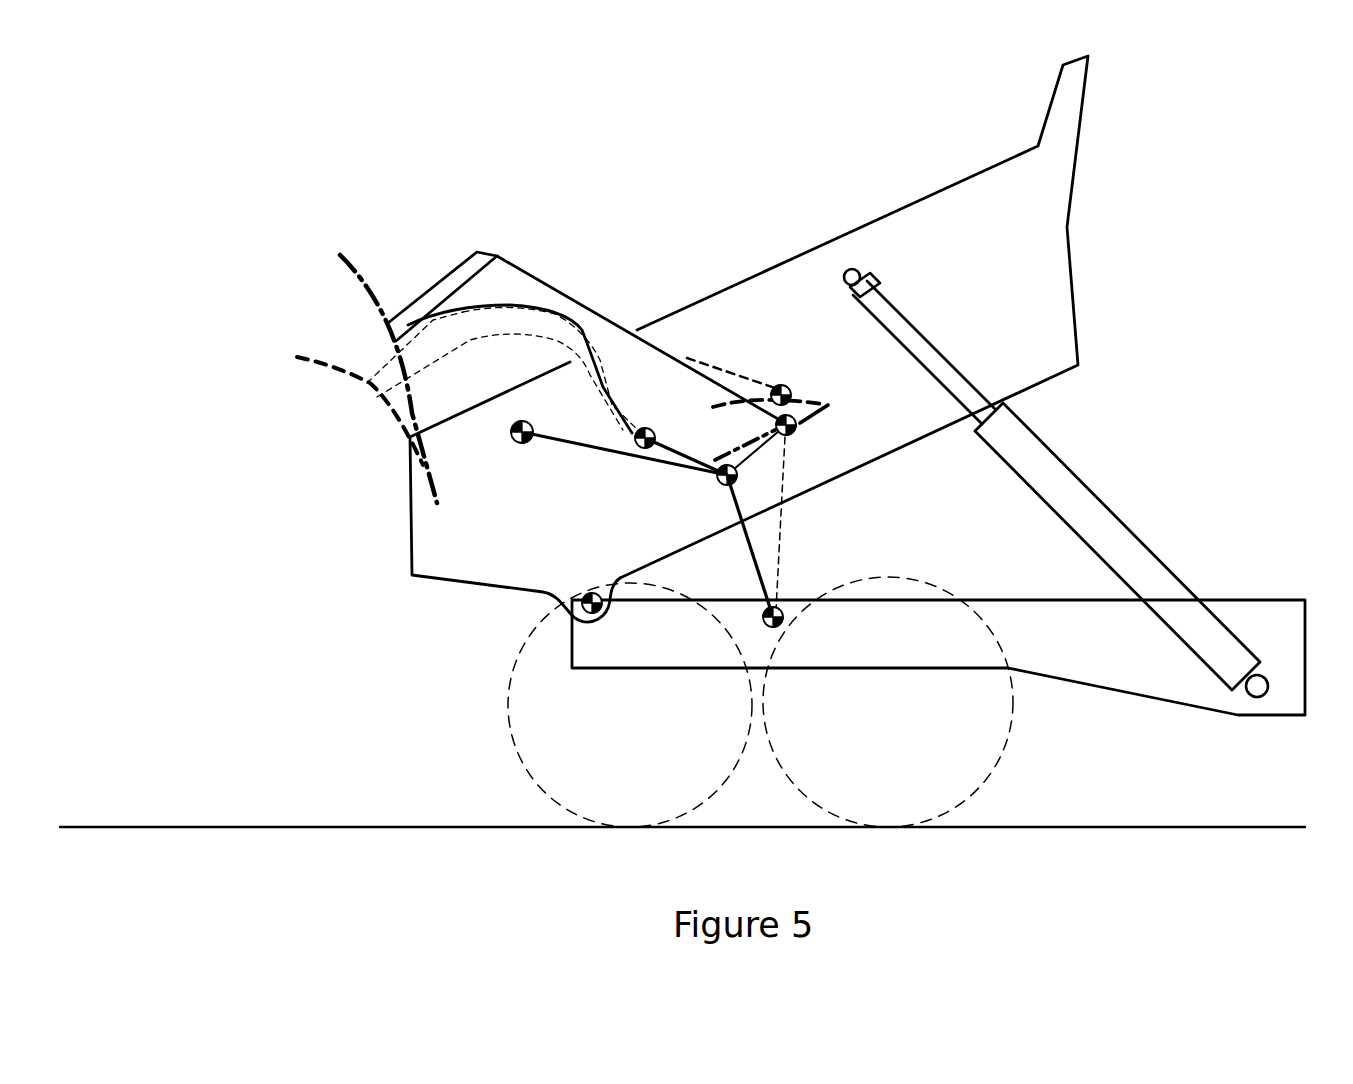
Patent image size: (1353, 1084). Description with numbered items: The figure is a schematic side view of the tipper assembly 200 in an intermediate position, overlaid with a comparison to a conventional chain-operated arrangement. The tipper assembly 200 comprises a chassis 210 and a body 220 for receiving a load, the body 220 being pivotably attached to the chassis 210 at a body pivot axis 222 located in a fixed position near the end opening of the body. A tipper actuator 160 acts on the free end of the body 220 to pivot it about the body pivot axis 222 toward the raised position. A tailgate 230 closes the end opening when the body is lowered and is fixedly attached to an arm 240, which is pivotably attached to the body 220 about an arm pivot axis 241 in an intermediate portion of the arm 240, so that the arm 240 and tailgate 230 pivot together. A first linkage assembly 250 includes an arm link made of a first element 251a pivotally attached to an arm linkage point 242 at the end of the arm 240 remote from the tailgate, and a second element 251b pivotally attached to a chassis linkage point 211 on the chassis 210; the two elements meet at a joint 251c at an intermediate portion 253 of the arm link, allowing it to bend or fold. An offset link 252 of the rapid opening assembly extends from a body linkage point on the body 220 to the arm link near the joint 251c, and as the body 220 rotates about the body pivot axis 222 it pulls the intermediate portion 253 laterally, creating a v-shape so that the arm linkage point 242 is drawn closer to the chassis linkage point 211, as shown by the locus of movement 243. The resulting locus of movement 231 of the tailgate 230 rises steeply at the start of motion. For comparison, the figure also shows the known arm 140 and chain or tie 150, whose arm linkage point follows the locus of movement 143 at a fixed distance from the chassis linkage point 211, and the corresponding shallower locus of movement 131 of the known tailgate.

The tipper assembly 200 is at (251, 327).
The locus of movement of tailgate 131 is at (300, 349).
The locus of movement of tailgate 231 is at (362, 263).
The tailgate 230 is at (453, 280).
The arm 140 is at (460, 337).
The arm 240 is at (603, 337).
The arm pivot axis 241 is at (652, 428).
The locus of movement of arm linkage point 143 is at (815, 397).
The body 220 is at (1014, 270).
The locus of movement of arm linkage point 243 is at (833, 418).
The arm linkage point 242 is at (796, 427).
The first element 251a is at (740, 470).
The chain or tie 150 is at (1024, 483).
The tipper actuator 160 is at (1107, 525).
The second element 251b is at (760, 572).
The offset link 252 is at (727, 472).
The first linkage assembly 250 is at (688, 482).
The joint 251c is at (615, 575).
The body pivot axis 222 is at (587, 613).
The intermediate portion of arm link 253 is at (723, 497).
The chassis linkage point 211 is at (775, 622).
The chassis 210 is at (1108, 642).